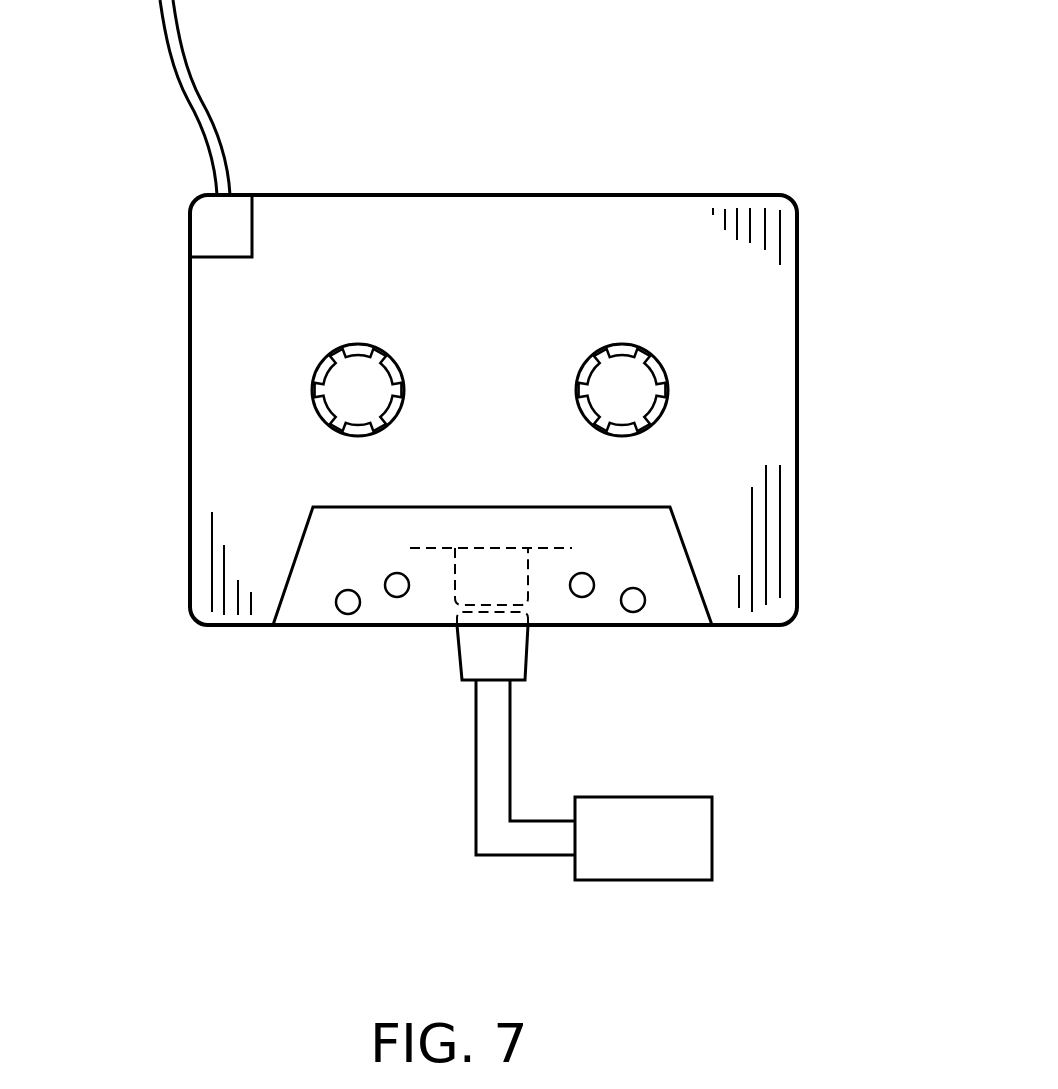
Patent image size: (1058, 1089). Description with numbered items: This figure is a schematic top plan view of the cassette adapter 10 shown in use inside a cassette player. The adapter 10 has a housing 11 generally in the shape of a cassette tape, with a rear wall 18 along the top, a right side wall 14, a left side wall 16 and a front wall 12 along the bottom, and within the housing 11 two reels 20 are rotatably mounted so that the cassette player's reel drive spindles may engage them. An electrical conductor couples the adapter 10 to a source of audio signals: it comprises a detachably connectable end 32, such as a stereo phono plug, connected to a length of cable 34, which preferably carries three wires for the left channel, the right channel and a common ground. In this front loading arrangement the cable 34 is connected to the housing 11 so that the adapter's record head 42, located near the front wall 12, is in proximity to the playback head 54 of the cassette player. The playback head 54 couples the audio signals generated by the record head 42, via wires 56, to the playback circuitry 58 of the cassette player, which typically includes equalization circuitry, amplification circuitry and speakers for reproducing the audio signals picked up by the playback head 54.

The adapter 10 is at (136, 496).
The housing 11 is at (768, 372).
The front wall 12 is at (240, 627).
The right side wall 14 is at (797, 508).
The left side wall 16 is at (190, 412).
The rear wall 18 is at (650, 193).
The reels 20 is at (378, 348).
The detachably connectable end 32 is at (190, 228).
The cable 34 is at (188, 70).
The record head 42 is at (482, 578).
The playback head 54 is at (528, 657).
The wires 56 is at (510, 738).
The playback circuitry 58 is at (712, 828).